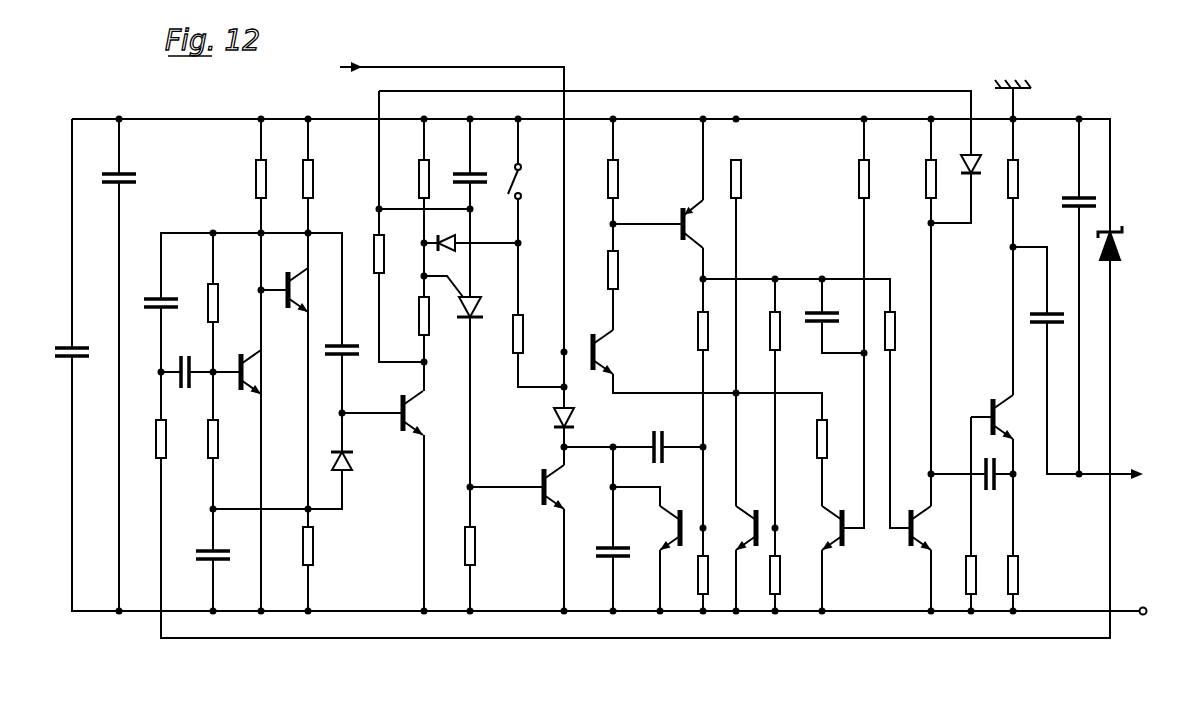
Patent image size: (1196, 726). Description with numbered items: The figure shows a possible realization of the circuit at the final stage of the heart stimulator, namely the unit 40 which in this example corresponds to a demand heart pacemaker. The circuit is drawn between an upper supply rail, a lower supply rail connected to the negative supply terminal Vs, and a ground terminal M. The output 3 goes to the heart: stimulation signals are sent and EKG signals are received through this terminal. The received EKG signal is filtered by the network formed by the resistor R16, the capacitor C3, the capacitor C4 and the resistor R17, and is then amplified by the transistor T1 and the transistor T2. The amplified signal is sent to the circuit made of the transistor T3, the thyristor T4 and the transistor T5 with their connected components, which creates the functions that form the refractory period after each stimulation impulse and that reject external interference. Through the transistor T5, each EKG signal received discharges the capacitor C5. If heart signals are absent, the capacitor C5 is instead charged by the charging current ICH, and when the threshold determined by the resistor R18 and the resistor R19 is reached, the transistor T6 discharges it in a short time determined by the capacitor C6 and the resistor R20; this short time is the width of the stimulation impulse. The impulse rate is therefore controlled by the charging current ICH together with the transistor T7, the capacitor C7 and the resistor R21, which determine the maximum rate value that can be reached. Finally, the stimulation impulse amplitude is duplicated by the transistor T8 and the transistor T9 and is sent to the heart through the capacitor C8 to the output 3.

The unit 40 is at (88, 115).
The charging current ICH is at (404, 49).
The ground (mass) terminal M is at (1013, 67).
The output 3 is at (1075, 474).
The negative supply voltage Vs is at (1139, 597).
The capacitor C3 is at (153, 289).
The capacitor C4 is at (194, 385).
The capacitor C5 is at (600, 560).
The capacitor C6 is at (654, 432).
The capacitor C7 is at (810, 326).
The capacitor C8 is at (1038, 323).
The resistor R16 is at (166, 450).
The resistor R17 is at (218, 286).
The resistor R18 is at (742, 190).
The resistor R19 is at (828, 426).
The resistor R20 is at (697, 340).
The resistor R21 is at (870, 178).
The transistor T1 is at (259, 372).
The transistor T2 is at (306, 290).
The transistor T3 is at (422, 413).
The thyristor T4 is at (478, 295).
The transistor T5 is at (562, 487).
The transistor T6 is at (659, 528).
The transistor T7 is at (821, 528).
The transistor T8 is at (927, 528).
The transistor T9 is at (1009, 416).